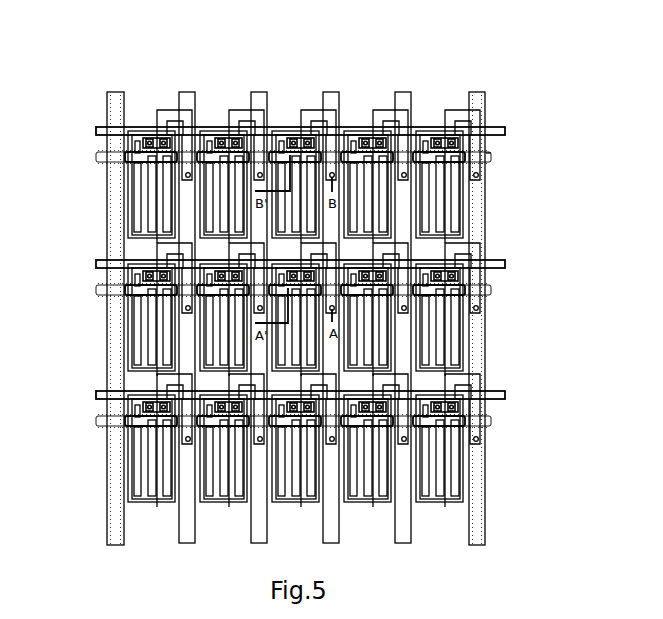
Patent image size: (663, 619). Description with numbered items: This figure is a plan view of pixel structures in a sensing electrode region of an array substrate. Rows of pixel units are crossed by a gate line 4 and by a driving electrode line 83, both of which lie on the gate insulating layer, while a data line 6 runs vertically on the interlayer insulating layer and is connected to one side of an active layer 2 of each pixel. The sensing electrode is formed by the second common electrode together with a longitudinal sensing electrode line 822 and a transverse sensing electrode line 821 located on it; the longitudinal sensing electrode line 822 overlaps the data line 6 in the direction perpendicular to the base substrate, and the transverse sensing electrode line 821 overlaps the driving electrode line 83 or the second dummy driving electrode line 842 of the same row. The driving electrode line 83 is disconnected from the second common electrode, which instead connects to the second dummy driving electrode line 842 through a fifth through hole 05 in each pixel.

The gate line 4 is at (96, 125).
The data line 6 is at (124, 92).
The active layer 2 is at (190, 110).
The fifth through hole 05 is at (289, 157).
The longitudinal sensing electrode line 822 is at (479, 91).
The transverse sensing electrode line 821 is at (490, 162).
The second dummy driving electrode line 842 is at (130, 162).
The driving electrode line 83 is at (97, 289).